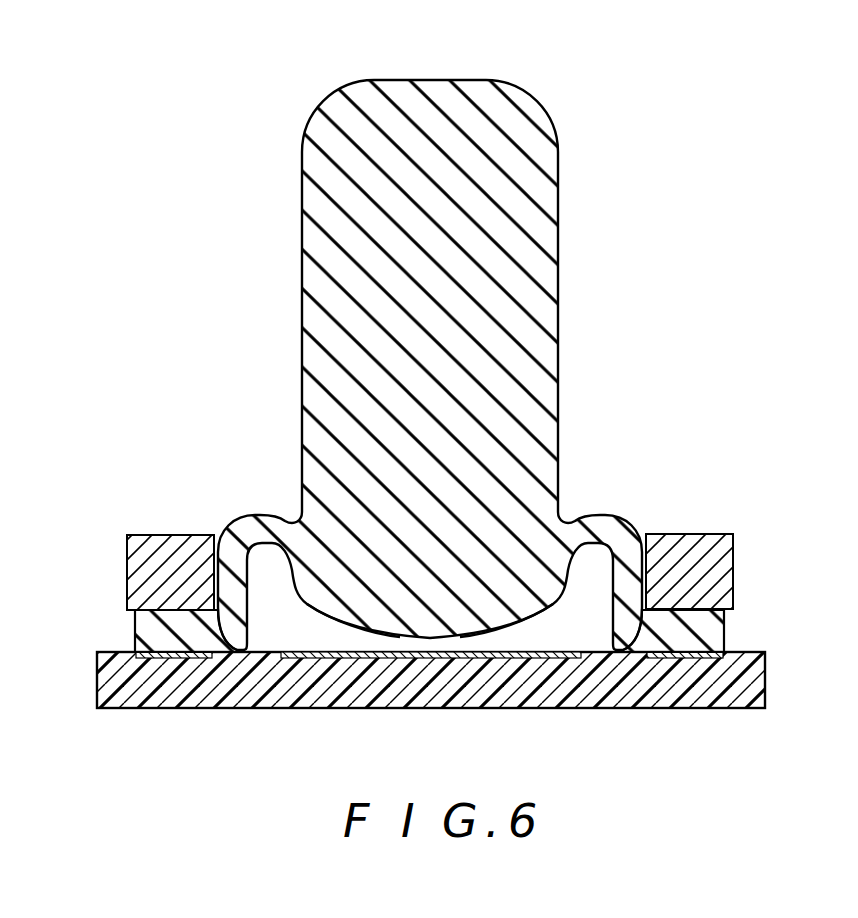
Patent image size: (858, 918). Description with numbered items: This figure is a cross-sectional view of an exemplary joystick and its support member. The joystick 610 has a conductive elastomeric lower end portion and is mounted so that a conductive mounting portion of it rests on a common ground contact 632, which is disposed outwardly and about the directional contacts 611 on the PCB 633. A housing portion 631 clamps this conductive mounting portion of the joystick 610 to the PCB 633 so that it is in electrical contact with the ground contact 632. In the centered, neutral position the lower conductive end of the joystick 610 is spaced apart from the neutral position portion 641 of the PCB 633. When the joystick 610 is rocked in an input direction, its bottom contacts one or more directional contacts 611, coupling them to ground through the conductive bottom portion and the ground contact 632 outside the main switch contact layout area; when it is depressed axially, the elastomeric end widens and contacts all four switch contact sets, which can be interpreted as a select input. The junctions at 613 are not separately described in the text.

The joystick 610 is at (430, 80).
The directional contacts 611 is at (526, 644).
The left fillet junction 613 is at (334, 644).
The housing portion 631 is at (735, 572).
The common ground contact 632 is at (180, 672).
The PCB 633 is at (767, 679).
The neutral position portion 641 is at (432, 656).